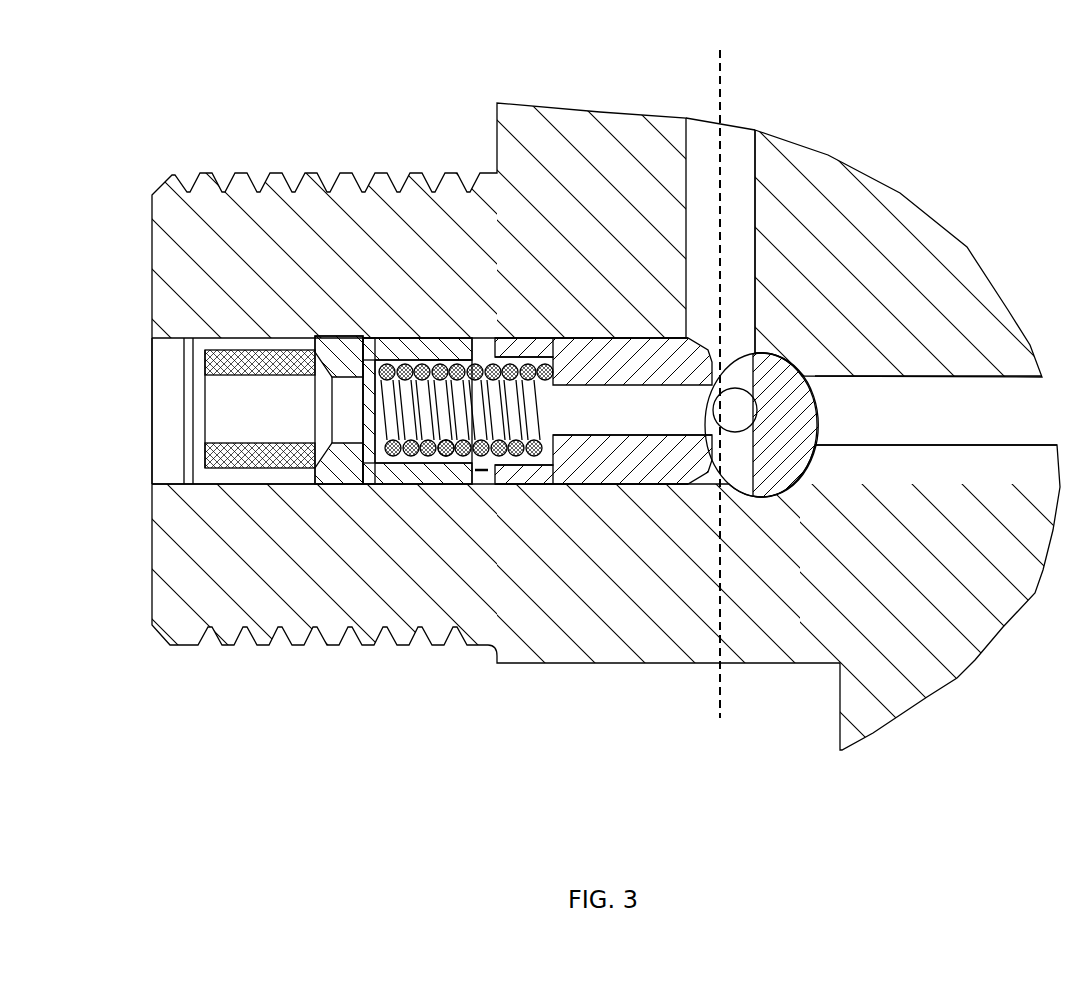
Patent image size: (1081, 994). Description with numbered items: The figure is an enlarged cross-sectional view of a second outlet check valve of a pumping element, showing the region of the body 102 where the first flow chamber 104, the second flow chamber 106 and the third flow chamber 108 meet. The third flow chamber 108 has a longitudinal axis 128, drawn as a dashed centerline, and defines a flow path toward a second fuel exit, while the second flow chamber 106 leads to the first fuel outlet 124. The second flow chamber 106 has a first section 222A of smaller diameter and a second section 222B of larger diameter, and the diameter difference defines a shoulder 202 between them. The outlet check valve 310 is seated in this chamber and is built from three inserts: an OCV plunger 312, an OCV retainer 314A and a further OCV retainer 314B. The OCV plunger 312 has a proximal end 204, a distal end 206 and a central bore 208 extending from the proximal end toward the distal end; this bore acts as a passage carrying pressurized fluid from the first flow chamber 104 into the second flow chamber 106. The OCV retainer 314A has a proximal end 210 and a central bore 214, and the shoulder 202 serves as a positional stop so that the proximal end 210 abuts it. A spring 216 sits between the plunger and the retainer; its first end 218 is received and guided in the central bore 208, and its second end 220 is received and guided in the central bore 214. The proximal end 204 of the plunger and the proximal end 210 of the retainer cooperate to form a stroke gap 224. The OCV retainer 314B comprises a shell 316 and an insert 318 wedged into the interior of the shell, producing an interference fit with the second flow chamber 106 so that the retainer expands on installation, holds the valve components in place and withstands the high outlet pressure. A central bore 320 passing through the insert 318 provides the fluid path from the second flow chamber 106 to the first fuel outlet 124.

The body 102 is at (947, 257).
The first flow chamber 104 is at (1022, 376).
The second flow chamber 106 is at (193, 340).
The third flow chamber 108 is at (755, 162).
The first fuel outlet 124 is at (150, 400).
The longitudinal axis 128 is at (722, 75).
The shoulder 202 is at (465, 345).
The proximal end of OCV plunger 204 is at (493, 345).
The distal end of OCV plunger 206 is at (815, 408).
The central bore of OCV plunger 208 is at (523, 357).
The proximal end of OCV retainer 210 is at (467, 350).
The central bore of OCV retainer 214 is at (407, 353).
The spring 216 is at (450, 457).
The first end of spring 218 is at (484, 509).
The second end of spring 220 is at (378, 486).
The first section of second flow chamber 222A is at (587, 338).
The second section of second flow chamber 222B is at (202, 487).
The stroke gap 224 is at (478, 484).
The outlet check valve 310 is at (540, 453).
The OCV plunger 312 is at (552, 480).
The OCV retainer 314A is at (398, 490).
The OCV retainer 314B is at (237, 489).
The shell 316 is at (262, 345).
The insert 318 is at (208, 368).
The central bore 320 is at (208, 408).